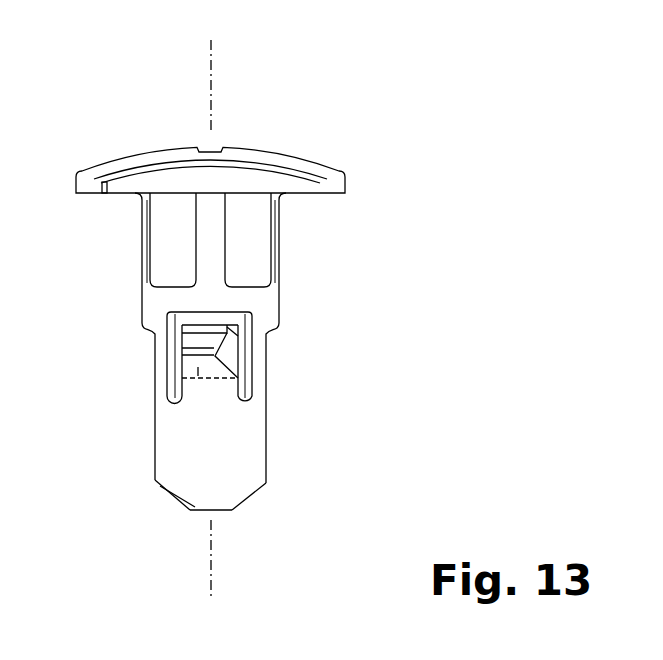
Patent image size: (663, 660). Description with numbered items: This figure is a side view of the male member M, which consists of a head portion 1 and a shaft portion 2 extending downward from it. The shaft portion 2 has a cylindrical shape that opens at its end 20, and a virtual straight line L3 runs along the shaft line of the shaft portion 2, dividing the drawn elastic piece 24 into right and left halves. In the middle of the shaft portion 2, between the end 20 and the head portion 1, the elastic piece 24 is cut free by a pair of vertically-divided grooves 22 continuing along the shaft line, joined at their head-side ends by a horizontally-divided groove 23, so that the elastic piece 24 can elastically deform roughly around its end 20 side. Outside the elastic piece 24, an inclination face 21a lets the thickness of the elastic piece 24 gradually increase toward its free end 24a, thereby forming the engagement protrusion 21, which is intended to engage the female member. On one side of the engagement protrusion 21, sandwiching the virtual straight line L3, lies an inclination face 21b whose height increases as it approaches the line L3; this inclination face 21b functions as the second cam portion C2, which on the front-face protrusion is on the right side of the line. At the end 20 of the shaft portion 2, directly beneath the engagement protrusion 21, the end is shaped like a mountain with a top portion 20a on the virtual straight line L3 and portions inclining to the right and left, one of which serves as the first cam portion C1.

The male member M is at (307, 149).
The virtual straight line L3 is at (206, 319).
The head portion 1 is at (248, 148).
The shaft portion 2 is at (265, 442).
The end 20 is at (228, 512).
The top portion 20a is at (224, 512).
The engagement protrusion 21 is at (178, 350).
The inclination face 21a is at (200, 380).
The inclination face 21b is at (224, 362).
The vertically-divided grooves 22 is at (178, 362).
The horizontally-divided groove 23 is at (208, 318).
The elastic piece 24 is at (202, 420).
The free end 24a is at (190, 311).
The first cam portion C1 is at (168, 503).
The second cam portion C2 is at (238, 323).